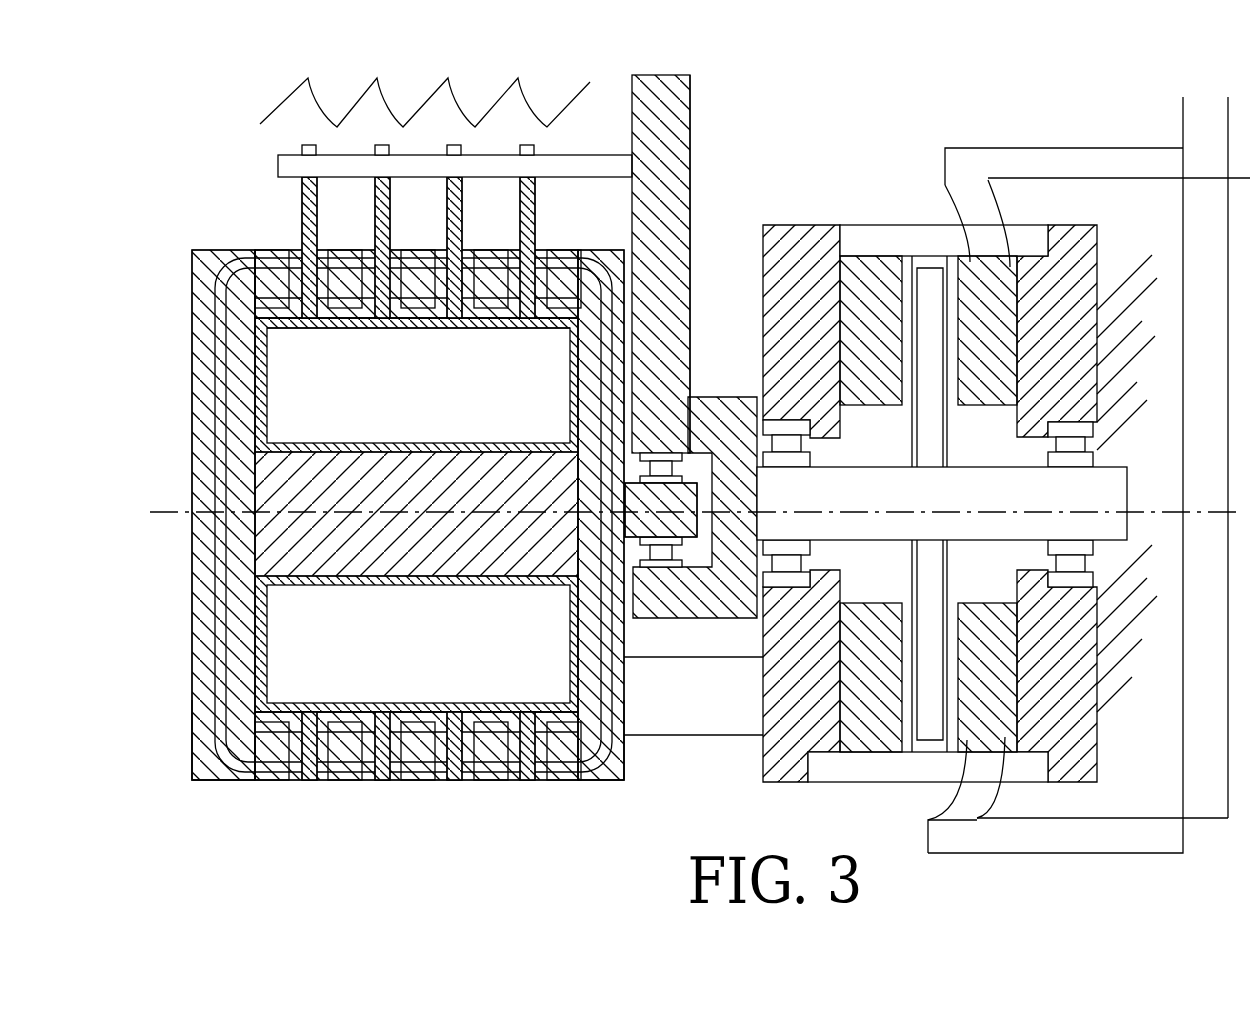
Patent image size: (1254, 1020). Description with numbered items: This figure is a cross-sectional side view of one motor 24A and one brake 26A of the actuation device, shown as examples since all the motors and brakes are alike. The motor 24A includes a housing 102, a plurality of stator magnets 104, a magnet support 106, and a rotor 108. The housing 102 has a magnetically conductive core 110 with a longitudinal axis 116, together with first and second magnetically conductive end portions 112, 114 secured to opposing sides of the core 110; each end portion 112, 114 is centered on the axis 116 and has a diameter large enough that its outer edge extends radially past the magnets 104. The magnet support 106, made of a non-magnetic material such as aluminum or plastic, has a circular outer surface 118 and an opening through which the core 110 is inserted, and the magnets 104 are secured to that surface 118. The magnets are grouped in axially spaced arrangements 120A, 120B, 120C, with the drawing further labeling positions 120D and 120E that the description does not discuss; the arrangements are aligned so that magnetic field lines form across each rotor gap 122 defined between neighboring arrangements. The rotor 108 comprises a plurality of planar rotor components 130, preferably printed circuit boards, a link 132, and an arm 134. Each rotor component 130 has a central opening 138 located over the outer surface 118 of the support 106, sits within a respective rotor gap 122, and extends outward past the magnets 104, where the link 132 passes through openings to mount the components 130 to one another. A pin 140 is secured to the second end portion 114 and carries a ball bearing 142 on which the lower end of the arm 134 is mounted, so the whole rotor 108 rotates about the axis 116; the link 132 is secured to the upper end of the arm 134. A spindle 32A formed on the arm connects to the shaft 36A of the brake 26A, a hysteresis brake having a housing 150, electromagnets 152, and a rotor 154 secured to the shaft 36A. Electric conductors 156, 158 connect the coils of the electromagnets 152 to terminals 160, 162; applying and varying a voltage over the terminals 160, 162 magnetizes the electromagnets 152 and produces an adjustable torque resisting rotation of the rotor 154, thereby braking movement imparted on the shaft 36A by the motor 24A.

The motor 24A is at (188, 156).
The brake 26A is at (894, 171).
The spindle 32A is at (706, 400).
The shaft 36A is at (1100, 467).
The housing 102 is at (192, 262).
The stator magnets 104 is at (275, 250).
The magnet support 106 is at (470, 328).
The rotor 108 is at (690, 113).
The magnetically conductive core 110 is at (430, 446).
The first end portion 112 is at (208, 780).
The second end portion 114 is at (600, 780).
The longitudinal axis 116 is at (155, 512).
The circular outer surface 118 is at (338, 322).
The first arrangement 120A is at (296, 820).
The second arrangement 120B is at (366, 820).
The third arrangement 120C is at (433, 820).
The pole position D 120D is at (502, 820).
The pole position E 120E is at (573, 820).
The rotor gap 122 is at (324, 251).
The rotor component 130 is at (306, 179).
The link 132 is at (618, 155).
The arm 134 is at (682, 203).
The central opening 138 is at (310, 325).
The pin 140 is at (702, 495).
The ball bearing 142 is at (683, 567).
The housing 150 is at (767, 290).
The electromagnets 152 is at (950, 255).
The rotor 154 is at (945, 442).
The electric conductor 156 is at (1063, 149).
The electric conductor 158 is at (1063, 179).
The terminal 160 is at (1183, 445).
The terminal 162 is at (1228, 445).